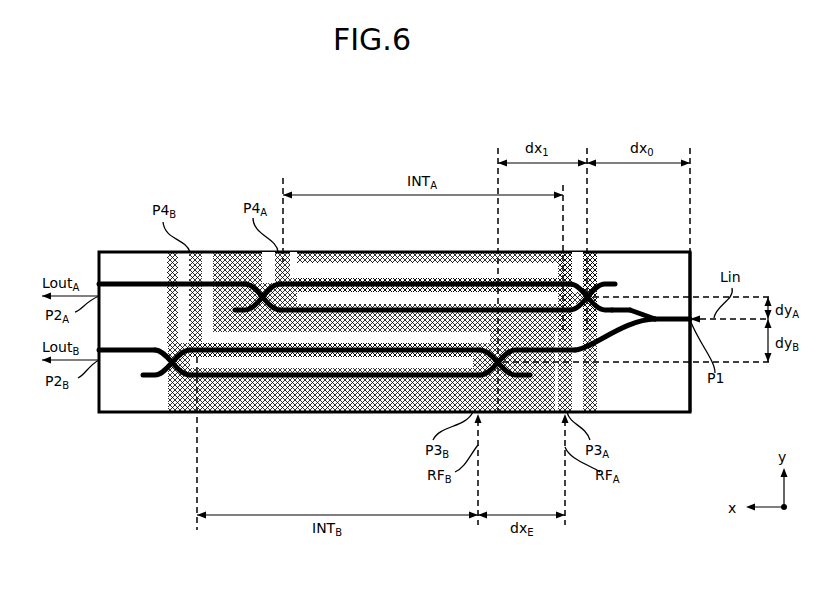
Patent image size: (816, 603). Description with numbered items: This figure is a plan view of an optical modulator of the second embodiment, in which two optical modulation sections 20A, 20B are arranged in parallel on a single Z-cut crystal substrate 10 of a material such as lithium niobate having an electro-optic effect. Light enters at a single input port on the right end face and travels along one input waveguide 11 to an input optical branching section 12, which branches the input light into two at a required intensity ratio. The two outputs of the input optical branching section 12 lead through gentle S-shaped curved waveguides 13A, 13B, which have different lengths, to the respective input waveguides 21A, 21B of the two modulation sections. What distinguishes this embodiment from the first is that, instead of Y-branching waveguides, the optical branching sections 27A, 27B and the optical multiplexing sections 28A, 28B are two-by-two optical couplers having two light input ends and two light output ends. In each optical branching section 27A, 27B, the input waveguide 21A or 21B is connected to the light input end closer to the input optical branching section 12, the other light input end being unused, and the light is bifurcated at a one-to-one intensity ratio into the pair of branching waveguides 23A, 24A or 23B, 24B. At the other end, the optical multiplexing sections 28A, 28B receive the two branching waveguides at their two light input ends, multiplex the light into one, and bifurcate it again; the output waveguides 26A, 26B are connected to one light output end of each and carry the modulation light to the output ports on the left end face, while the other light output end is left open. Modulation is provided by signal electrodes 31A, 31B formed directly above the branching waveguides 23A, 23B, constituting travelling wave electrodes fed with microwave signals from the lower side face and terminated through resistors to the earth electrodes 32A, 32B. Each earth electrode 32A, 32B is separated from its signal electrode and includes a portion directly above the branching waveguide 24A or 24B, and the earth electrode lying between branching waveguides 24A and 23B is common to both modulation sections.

The substrate 10 is at (683, 412).
The input waveguide 11 is at (690, 283).
The input optical branching section 12 is at (667, 318).
The curved waveguide 13A is at (647, 314).
The curved waveguide 13B is at (618, 337).
The optical modulation section 20A is at (369, 219).
The optical modulation section 20B is at (335, 440).
The input waveguide 21A is at (622, 310).
The input waveguide 21B is at (545, 372).
The branching waveguide 23A is at (353, 290).
The branching waveguide 23B is at (248, 373).
The branching waveguide 24A is at (312, 305).
The branching waveguide 24B is at (226, 368).
The output waveguide 26A is at (130, 284).
The output waveguide 26B is at (130, 355).
The optical branching section 27A is at (596, 284).
The optical branching section 27B is at (499, 372).
The optical multiplexing section 28A is at (258, 293).
The optical multiplexing section 28B is at (173, 372).
The signal electrode 31A is at (406, 292).
The signal electrode 31B is at (308, 357).
The earth electrode 32A is at (450, 320).
The earth electrode 32B is at (365, 395).